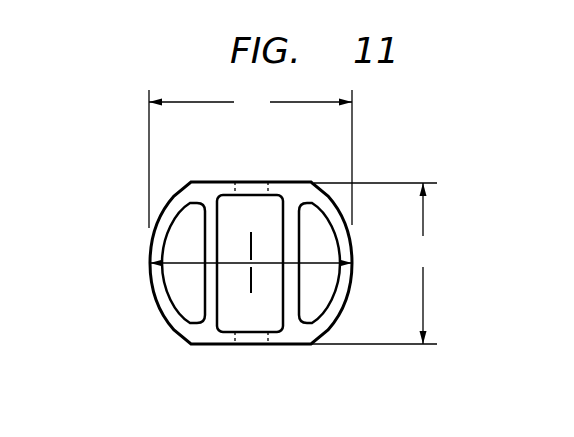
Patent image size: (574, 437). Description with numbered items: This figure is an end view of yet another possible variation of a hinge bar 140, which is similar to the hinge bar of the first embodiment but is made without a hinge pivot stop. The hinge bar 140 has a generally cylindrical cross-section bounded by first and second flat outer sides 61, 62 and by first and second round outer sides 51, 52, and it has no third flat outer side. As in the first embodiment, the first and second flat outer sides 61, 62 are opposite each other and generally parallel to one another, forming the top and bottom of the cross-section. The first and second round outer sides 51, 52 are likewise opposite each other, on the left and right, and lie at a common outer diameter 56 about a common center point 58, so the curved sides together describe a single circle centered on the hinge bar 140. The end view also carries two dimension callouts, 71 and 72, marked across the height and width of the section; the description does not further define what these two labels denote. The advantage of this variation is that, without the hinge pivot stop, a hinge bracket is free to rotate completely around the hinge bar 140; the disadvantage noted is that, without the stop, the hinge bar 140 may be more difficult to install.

The hinge bar 140 is at (128, 249).
The second round outer side 52 is at (150, 292).
The first round outer side 51 is at (345, 302).
The common outer diameter 56 is at (228, 263).
The common center point 58 is at (250, 266).
The first flat outer side 61 is at (250, 347).
The second flat outer side 62 is at (252, 181).
The height dimension 71 is at (368, 263).
The width dimension 72 is at (250, 159).